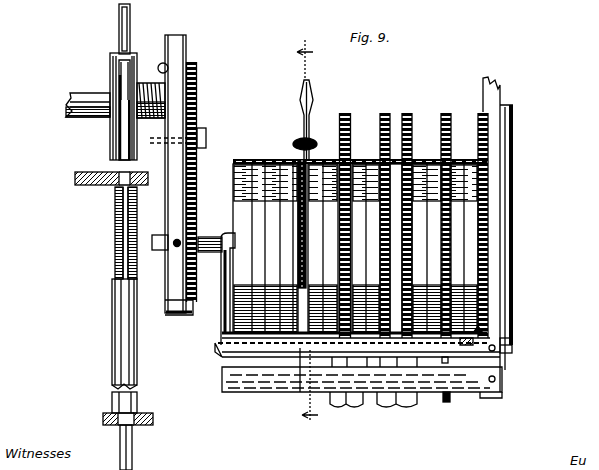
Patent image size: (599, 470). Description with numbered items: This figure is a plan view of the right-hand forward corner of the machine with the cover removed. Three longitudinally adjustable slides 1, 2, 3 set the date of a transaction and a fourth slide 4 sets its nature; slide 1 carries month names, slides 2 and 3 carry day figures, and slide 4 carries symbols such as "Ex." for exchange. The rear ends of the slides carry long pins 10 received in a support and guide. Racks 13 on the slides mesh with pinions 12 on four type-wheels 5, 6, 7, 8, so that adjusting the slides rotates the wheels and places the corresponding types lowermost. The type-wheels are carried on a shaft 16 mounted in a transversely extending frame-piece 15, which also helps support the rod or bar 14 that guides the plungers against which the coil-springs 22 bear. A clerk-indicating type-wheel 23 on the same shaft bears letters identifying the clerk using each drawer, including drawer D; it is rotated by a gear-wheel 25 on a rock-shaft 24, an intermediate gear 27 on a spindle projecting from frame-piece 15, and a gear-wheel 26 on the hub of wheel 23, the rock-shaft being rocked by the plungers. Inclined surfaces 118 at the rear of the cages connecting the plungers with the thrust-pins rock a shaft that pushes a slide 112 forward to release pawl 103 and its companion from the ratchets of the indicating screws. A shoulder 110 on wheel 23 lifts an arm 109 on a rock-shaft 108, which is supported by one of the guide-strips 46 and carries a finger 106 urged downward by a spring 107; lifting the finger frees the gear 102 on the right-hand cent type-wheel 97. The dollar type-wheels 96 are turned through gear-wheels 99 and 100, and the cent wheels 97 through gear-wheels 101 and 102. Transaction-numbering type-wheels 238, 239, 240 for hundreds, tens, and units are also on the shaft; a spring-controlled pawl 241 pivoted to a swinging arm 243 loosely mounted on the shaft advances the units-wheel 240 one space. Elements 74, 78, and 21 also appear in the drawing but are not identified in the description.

The inclined surfaces 118 is at (121, 23).
The tube 74 is at (129, 26).
The rock-shaft 24 is at (85, 118).
The intermediate gear 27 is at (118, 157).
The gear-wheel 25 is at (198, 84).
The bracket 78 is at (143, 151).
The horizontally-arranged rod or bar 14 is at (86, 186).
The transversely-extending frame-piece 15 is at (180, 206).
The gear-wheel 26 is at (114, 207).
The coil-springs 22 is at (114, 246).
The shaft 16 is at (159, 250).
The rod 21 is at (112, 304).
The spring-controlled pawl 241 is at (236, 173).
The clerk-indicating type-wheel 23 is at (238, 160).
The hundreds type-wheel 238 is at (255, 160).
The tens type-wheel 239 is at (270, 160).
The units type-wheel 240 is at (300, 135).
The swinging arm 243 is at (312, 122).
The long pins 10 is at (307, 235).
The type-wheel 5 is at (327, 160).
The type-wheel 6 is at (360, 160).
The type-wheel 7 is at (372, 160).
The type-wheel 8 is at (395, 160).
The racks 13 is at (407, 112).
The dollar type-wheels 96 is at (432, 160).
The gear-wheel 100 is at (445, 160).
The cent type-wheels 97 is at (470, 160).
The gear-wheel 101 is at (484, 125).
The slide 112 is at (502, 238).
The gear-wheel 102 is at (486, 228).
The finger 106 is at (487, 284).
The shoulder 110 is at (230, 250).
The pinions 12 is at (342, 254).
The pin or arm 109 is at (222, 310).
The drawer D is at (218, 348).
The rock-shaft 108 is at (280, 345).
The spring-controlled pawl 103 is at (513, 344).
The spring 107 is at (488, 332).
The slide 1 is at (338, 408).
The slide 2 is at (354, 408).
The slide 3 is at (385, 410).
The slide 4 is at (406, 410).
The gear-wheel 99 is at (447, 402).
The guide-strips 46 is at (462, 377).